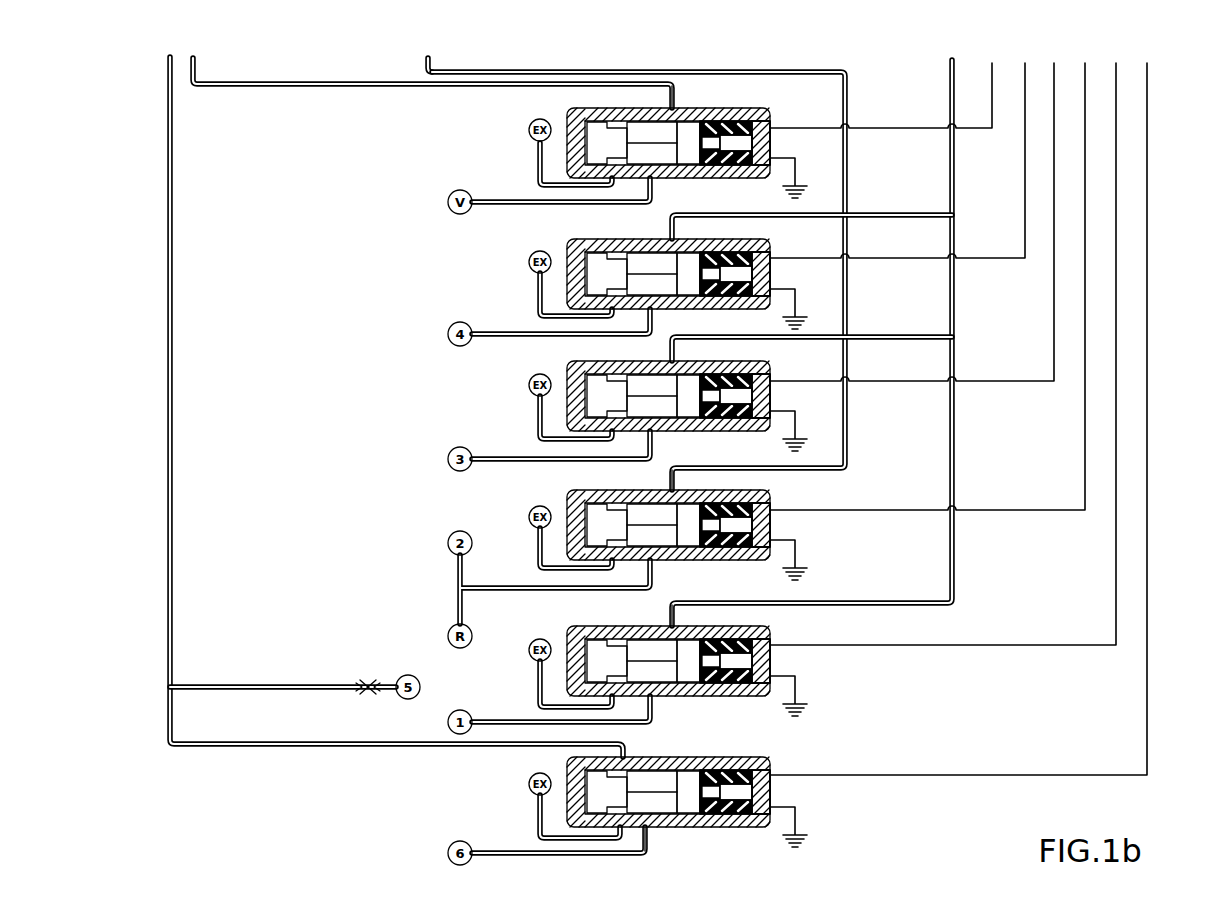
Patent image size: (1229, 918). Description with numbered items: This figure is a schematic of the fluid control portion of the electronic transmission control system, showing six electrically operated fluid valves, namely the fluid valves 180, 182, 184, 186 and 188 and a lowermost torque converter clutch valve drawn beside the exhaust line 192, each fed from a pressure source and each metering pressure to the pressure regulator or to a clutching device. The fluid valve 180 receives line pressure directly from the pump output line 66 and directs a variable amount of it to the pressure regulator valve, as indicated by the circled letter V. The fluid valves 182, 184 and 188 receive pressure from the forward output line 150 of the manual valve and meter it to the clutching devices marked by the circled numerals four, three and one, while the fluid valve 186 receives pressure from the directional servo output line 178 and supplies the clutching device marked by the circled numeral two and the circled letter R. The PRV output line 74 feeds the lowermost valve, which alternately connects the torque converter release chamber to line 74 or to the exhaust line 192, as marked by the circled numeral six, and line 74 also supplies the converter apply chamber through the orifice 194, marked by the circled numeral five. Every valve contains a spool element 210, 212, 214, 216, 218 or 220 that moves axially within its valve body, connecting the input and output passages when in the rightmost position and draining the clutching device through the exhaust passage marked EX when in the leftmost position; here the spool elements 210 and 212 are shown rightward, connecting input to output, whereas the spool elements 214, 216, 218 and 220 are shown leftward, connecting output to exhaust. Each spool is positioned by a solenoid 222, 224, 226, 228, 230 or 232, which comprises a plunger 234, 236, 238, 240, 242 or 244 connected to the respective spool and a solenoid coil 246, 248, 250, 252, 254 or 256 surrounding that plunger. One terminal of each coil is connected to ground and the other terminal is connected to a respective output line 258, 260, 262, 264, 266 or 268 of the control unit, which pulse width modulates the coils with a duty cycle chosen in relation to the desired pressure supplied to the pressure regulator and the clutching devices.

The pump output line 66 is at (205, 86).
The PRV output line 74 is at (172, 285).
The forward output line 150 is at (428, 63).
The directional servo output line 178 is at (706, 74).
The fluid valve 180 is at (568, 118).
The fluid valve 182 is at (568, 245).
The fluid valve 184 is at (568, 368).
The fluid valve 186 is at (568, 497).
The fluid valve 188 is at (568, 627).
The exhaust line 192 is at (568, 777).
The orifice 194 is at (368, 683).
The spool element 210 is at (722, 120).
The spool element 212 is at (652, 242).
The spool element 214 is at (636, 362).
The spool element 216 is at (628, 492).
The spool element 218 is at (636, 626).
The spool element 220 is at (666, 829).
The solenoid 222 is at (776, 143).
The solenoid 224 is at (776, 272).
The solenoid 226 is at (776, 397).
The solenoid 228 is at (776, 526).
The solenoid 230 is at (776, 660).
The solenoid 232 is at (776, 783).
The plunger 234 is at (740, 168).
The plunger 236 is at (776, 244).
The plunger 238 is at (662, 432).
The plunger 240 is at (702, 560).
The plunger 242 is at (702, 697).
The plunger 244 is at (705, 829).
The solenoid coil 246 is at (776, 112).
The solenoid coil 248 is at (740, 302).
The solenoid coil 250 is at (718, 410).
The solenoid coil 252 is at (718, 542).
The solenoid coil 254 is at (718, 680).
The solenoid coil 256 is at (740, 826).
The output line 258 is at (992, 131).
The output line 260 is at (1025, 259).
The output line 262 is at (1005, 382).
The output line 264 is at (1016, 511).
The output line 266 is at (990, 646).
The output line 268 is at (975, 768).